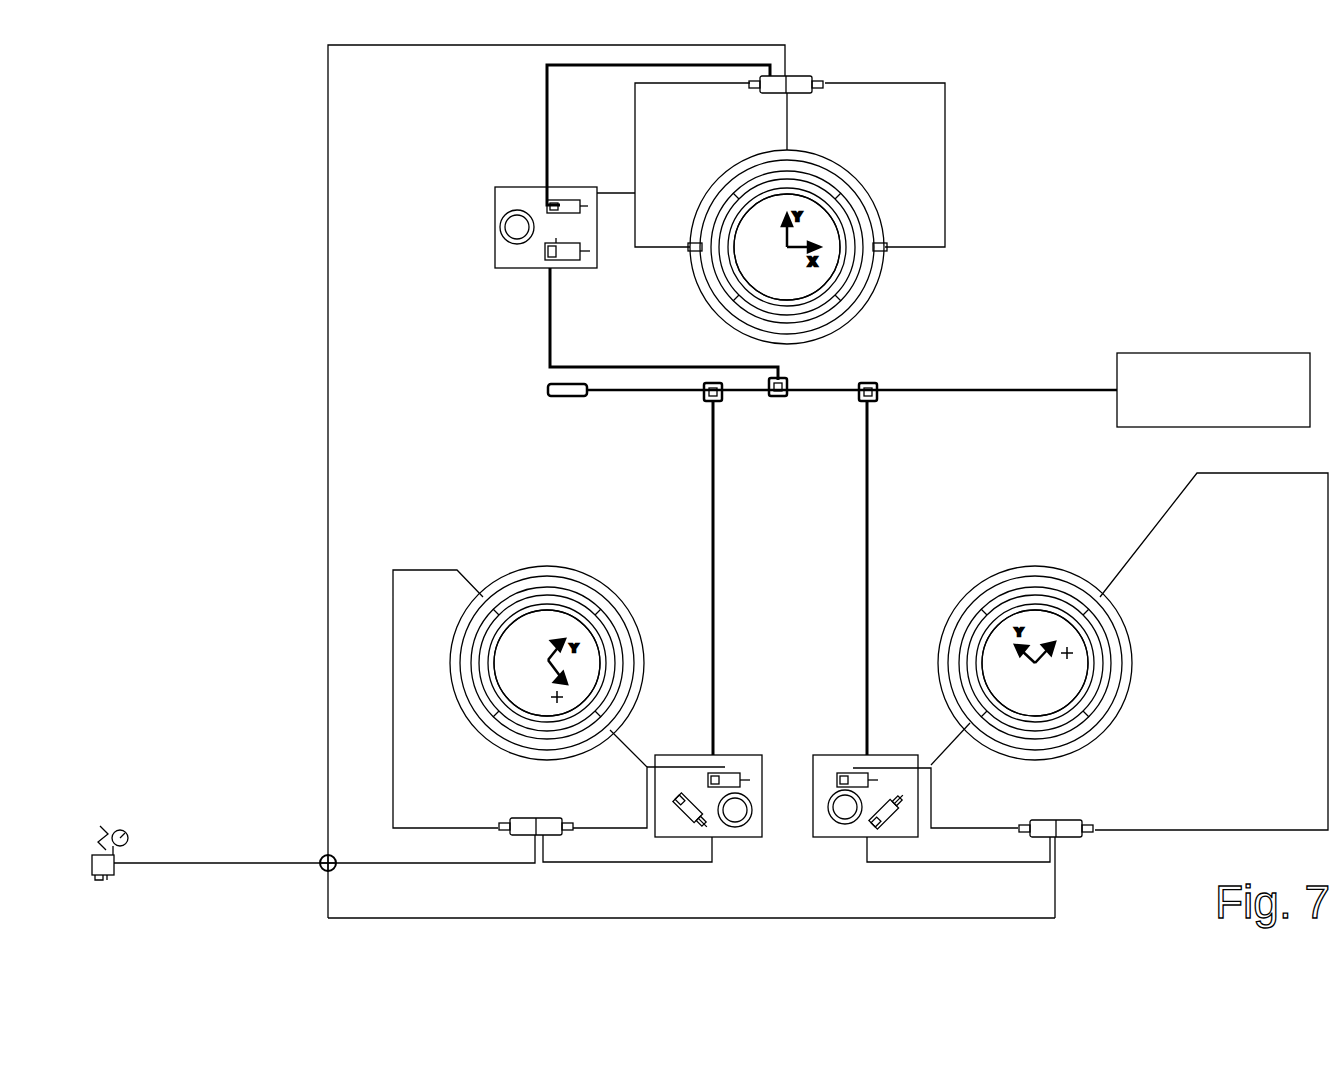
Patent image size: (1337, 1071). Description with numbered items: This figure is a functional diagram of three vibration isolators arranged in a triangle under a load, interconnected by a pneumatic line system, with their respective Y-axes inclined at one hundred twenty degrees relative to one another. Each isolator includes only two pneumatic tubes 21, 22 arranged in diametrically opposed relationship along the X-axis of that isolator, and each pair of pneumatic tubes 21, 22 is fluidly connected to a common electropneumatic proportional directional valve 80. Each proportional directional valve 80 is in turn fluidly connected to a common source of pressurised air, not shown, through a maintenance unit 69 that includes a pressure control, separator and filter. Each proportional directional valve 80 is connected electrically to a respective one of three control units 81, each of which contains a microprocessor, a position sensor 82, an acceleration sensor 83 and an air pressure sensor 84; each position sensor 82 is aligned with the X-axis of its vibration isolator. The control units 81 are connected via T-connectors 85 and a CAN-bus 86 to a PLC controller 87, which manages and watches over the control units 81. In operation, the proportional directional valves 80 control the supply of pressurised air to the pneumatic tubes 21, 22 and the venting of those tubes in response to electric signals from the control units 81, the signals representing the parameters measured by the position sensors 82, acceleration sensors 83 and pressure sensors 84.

The pneumatic tube 21 is at (791, 490).
The pneumatic tube 22 is at (822, 455).
The maintenance unit 69 is at (110, 825).
The electropneumatic proportional directional valve 80 is at (794, 457).
The control unit 81 is at (661, 509).
The position sensor 82 is at (684, 573).
The acceleration sensor 83 is at (657, 562).
The air pressure sensor 84 is at (669, 439).
The T-connector 85 is at (746, 402).
The CAN-bus 86 is at (852, 413).
The PLC controller 87 is at (1213, 362).